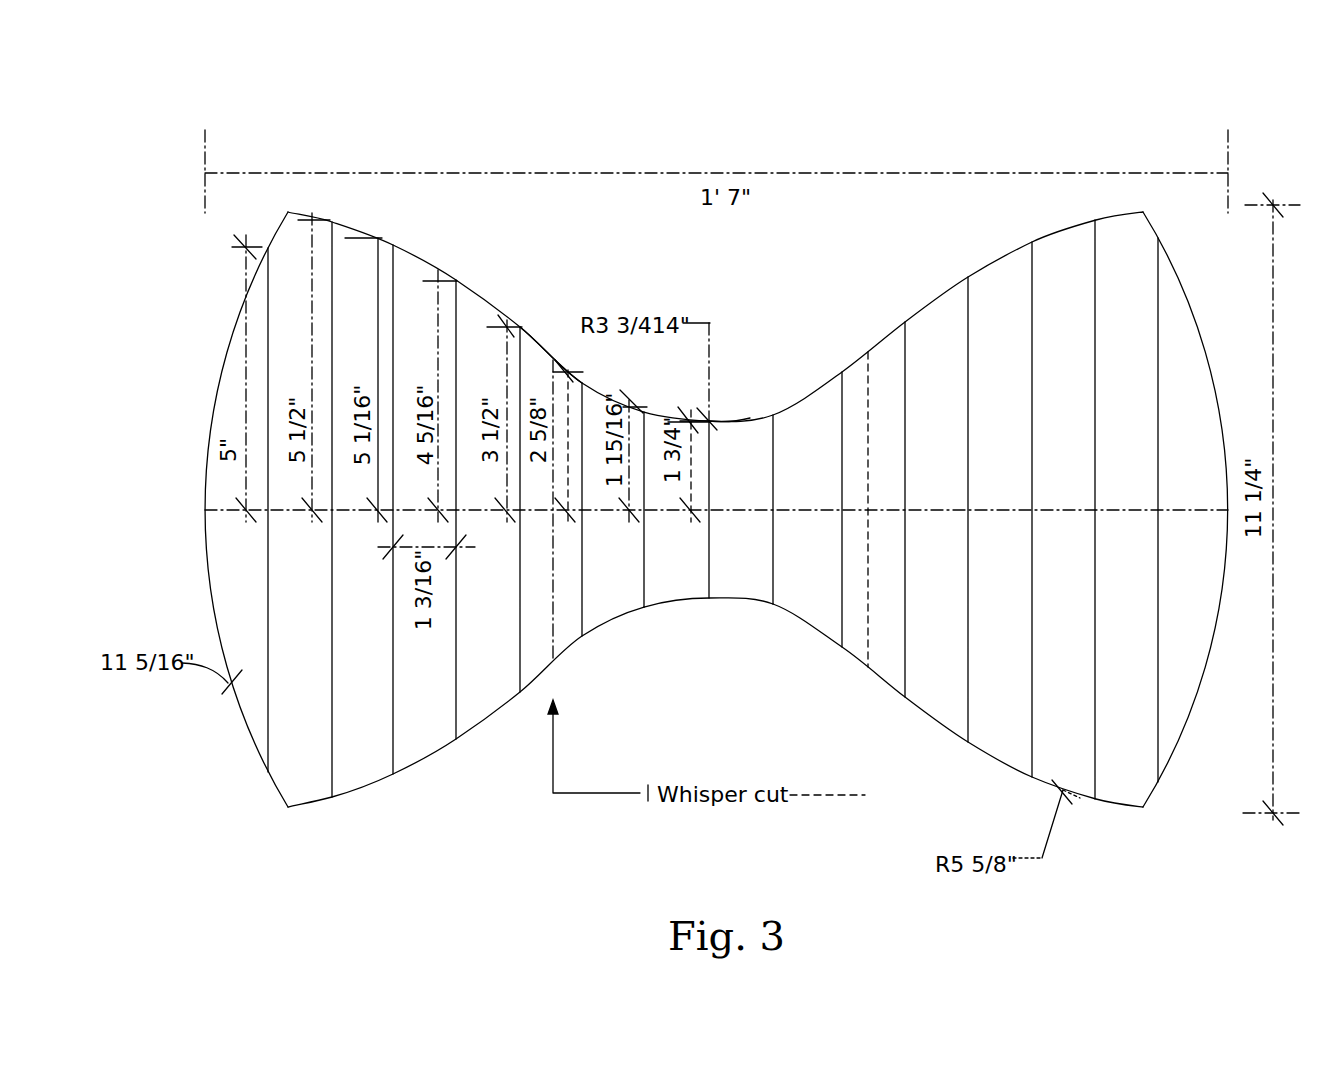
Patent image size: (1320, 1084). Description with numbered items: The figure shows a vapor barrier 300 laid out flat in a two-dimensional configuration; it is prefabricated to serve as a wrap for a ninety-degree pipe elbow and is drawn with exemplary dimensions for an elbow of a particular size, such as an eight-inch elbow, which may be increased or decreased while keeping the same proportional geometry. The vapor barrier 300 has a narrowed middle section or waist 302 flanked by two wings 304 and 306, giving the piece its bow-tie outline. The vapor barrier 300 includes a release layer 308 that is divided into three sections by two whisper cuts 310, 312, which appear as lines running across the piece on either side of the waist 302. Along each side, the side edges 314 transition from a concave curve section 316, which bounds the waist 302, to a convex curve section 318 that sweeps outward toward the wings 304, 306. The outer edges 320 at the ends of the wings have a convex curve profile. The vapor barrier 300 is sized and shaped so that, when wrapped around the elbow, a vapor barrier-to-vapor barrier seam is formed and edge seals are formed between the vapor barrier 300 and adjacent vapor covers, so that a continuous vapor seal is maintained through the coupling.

The vapor barrier 300 is at (874, 106).
The middle section or waist 302 is at (745, 412).
The wing 304 is at (990, 262).
The wing 306 is at (423, 258).
The release layer 308 is at (760, 478).
The whisper cut 310 is at (868, 673).
The whisper cut 312 is at (553, 667).
The side edge 314 is at (540, 340).
The concave curve section 316 is at (675, 604).
The convex curve section 318 is at (418, 765).
The outer edge 320 is at (207, 441).